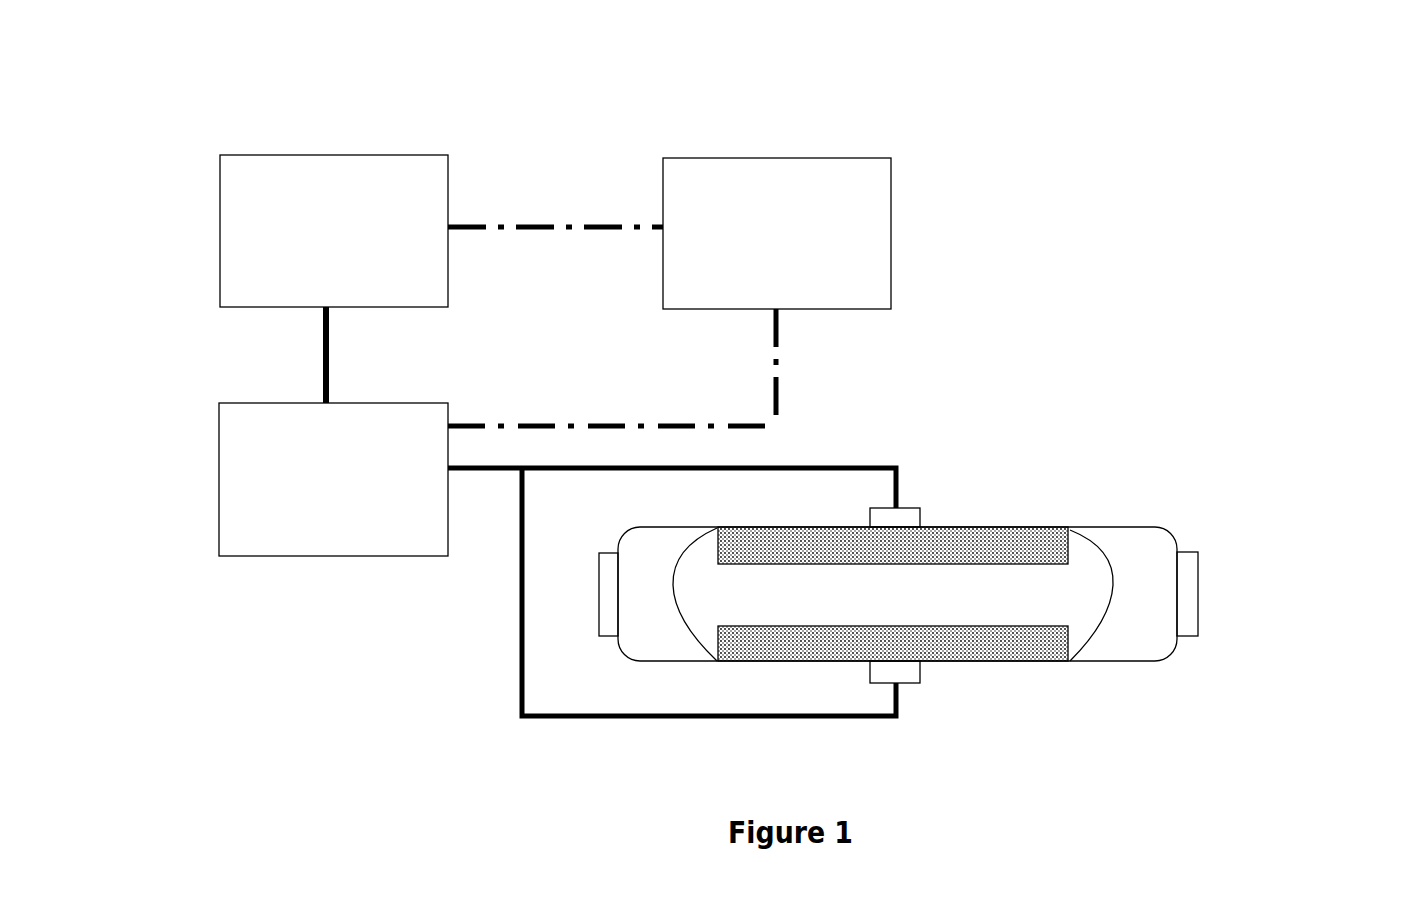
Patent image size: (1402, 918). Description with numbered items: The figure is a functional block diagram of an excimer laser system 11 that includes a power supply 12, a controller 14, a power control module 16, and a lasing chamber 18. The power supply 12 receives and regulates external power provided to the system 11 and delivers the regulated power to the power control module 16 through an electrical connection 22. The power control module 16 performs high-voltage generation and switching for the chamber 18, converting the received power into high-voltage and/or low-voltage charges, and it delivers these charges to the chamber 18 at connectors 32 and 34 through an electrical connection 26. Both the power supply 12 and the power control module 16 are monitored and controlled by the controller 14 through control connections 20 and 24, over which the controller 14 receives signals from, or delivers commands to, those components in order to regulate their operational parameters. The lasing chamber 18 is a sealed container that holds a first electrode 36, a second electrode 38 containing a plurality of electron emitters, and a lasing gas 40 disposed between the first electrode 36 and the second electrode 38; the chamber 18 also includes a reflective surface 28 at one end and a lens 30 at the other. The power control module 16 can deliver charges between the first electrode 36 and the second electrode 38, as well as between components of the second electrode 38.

The excimer laser system 11 is at (1227, 107).
The power supply 12 is at (307, 155).
The controller 14 is at (770, 158).
The power control module 16 is at (219, 485).
The lasing chamber 18 is at (1115, 527).
The control connection 20 is at (473, 227).
The electrical connection 22 is at (328, 378).
The control connection 24 is at (776, 397).
The electrical connection 26 is at (522, 687).
The reflective surface 28 is at (598, 618).
The lens 30 is at (1198, 602).
The connector 32 is at (905, 508).
The connector 34 is at (913, 683).
The first electrode 36 is at (933, 547).
The second electrode 38 is at (947, 640).
The lasing gas 40 is at (1080, 602).